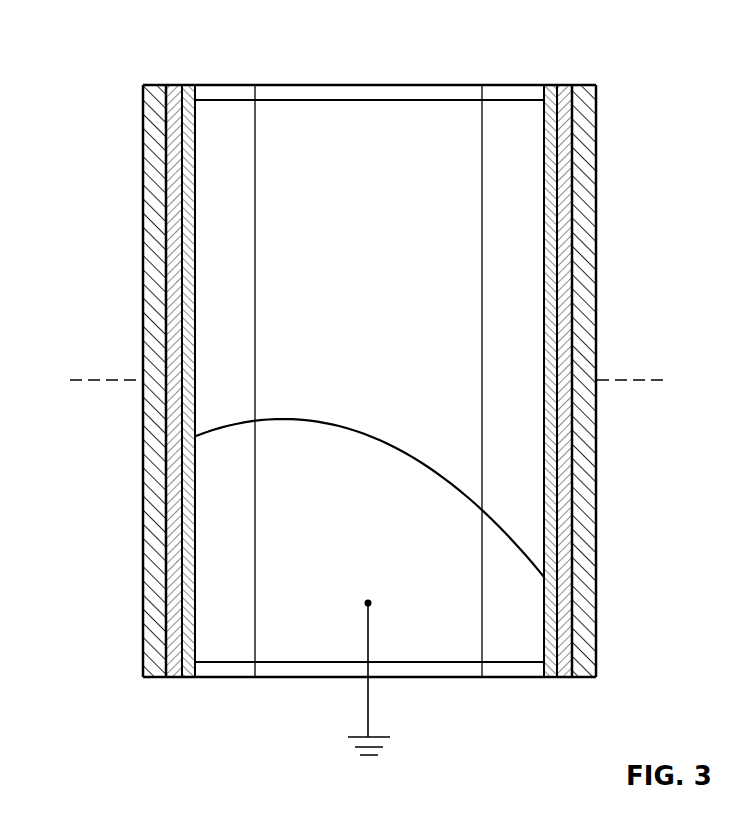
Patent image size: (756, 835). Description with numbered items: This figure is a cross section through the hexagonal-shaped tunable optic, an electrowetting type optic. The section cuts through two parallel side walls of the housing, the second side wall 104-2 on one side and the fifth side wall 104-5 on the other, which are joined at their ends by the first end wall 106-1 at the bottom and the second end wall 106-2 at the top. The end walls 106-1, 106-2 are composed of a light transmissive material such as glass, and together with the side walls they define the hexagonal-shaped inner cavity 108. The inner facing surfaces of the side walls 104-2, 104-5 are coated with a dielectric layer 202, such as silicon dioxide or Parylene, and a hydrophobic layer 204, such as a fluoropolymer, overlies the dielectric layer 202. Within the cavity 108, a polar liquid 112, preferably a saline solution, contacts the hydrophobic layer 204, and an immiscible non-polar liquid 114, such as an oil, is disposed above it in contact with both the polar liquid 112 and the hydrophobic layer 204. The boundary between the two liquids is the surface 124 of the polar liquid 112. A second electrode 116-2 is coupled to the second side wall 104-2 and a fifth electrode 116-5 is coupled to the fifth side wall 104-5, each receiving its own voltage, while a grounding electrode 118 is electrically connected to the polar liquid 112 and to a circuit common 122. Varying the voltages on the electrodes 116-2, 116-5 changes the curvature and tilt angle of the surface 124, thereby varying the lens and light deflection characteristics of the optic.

The second side wall 104-2 is at (142, 500).
The fifth side wall 104-5 is at (597, 500).
The dielectric layer 202 is at (173, 85).
The hydrophobic layer 204 is at (189, 85).
The second end wall 106-2 is at (368, 85).
The first end wall 106-1 is at (228, 668).
The hexagonal-shaped inner cavity 108 is at (494, 155).
The non-polar liquid 114 is at (392, 233).
The polar liquid 112 is at (392, 533).
The surface 124 is at (362, 433).
The second electrode 116-2 is at (85, 380).
The fifth electrode 116-5 is at (637, 380).
The grounding electrode 118 is at (370, 700).
The circuit common 122 is at (388, 745).